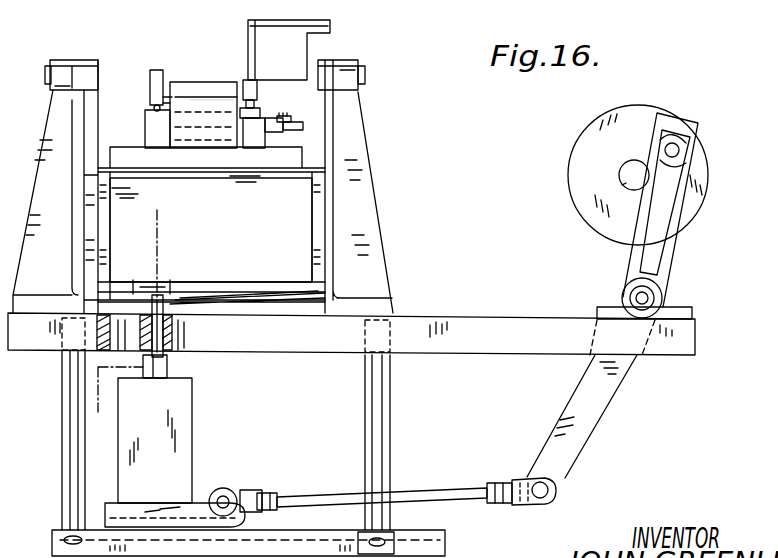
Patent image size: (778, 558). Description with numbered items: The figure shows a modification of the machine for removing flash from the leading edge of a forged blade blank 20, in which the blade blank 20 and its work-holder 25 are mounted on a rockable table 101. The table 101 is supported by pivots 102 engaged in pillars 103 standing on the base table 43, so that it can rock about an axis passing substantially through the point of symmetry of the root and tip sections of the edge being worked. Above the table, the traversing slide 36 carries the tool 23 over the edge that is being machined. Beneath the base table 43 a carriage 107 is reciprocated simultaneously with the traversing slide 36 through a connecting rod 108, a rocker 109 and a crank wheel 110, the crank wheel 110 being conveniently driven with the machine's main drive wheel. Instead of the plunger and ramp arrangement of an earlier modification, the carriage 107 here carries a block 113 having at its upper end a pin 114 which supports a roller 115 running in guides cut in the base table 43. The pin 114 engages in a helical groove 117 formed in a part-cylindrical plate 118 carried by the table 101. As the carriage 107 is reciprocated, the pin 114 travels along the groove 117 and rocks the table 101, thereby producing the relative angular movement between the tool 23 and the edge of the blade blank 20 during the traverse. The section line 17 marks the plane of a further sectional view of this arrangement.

The section line 17 is at (180, 229).
The blade blank 20 is at (187, 77).
The tool 23 is at (260, 80).
The work-holder 25 is at (200, 137).
The traversing slide 36 is at (295, 50).
The base table 43 is at (499, 322).
The rockable table 101 is at (230, 172).
The pivots 102 is at (75, 86).
The pillars 103 is at (57, 203).
The carriage 107 is at (185, 513).
The connecting rod 108 is at (440, 486).
The rocker 109 is at (605, 413).
The crank wheel 110 is at (587, 157).
The block 113 is at (185, 432).
The pin 114 is at (173, 323).
The roller 115 is at (180, 350).
The helical groove 117 is at (250, 300).
The part-cylindrical plate 118 is at (203, 288).